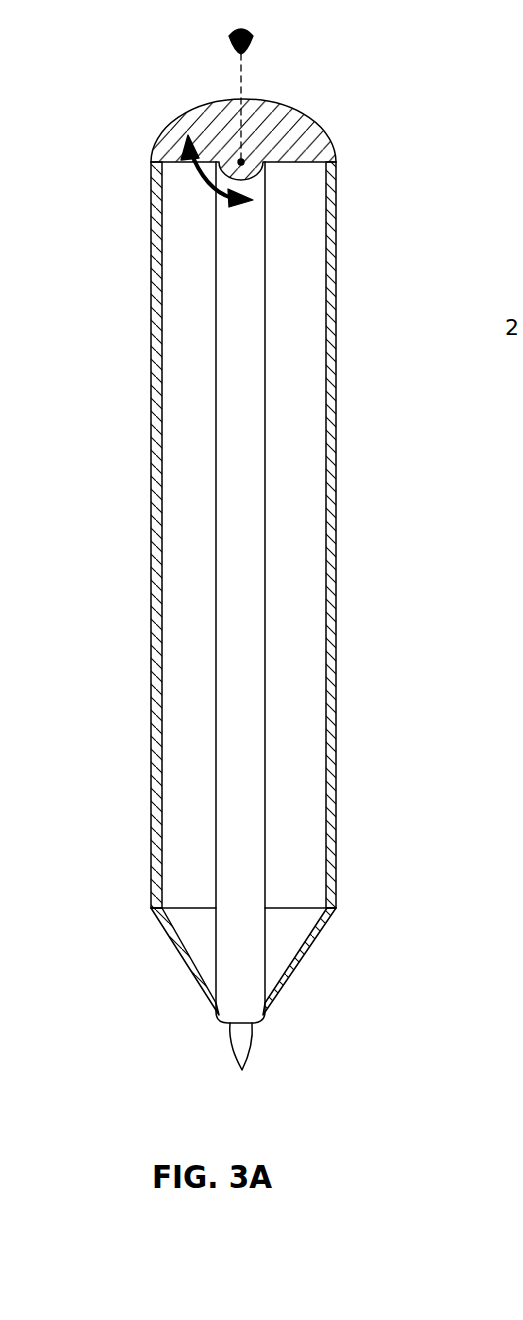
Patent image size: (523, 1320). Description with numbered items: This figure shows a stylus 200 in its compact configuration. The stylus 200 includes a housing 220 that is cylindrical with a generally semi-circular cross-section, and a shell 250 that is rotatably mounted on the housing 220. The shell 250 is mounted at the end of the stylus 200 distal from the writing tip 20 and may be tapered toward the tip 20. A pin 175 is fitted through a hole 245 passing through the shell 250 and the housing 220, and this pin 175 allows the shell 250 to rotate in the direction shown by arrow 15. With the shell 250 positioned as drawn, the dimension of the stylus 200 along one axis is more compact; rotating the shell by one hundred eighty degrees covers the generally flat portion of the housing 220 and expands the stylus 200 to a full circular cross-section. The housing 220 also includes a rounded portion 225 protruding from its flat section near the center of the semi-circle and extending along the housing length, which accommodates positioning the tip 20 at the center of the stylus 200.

The stylus 200 is at (118, 224).
The shell 250 is at (320, 130).
The hole 245 is at (308, 137).
The pin 175 is at (247, 50).
The arrow 15 is at (186, 161).
The housing 220 is at (287, 322).
The rounded portion 225 is at (238, 553).
The writing tip 20 is at (247, 1037).